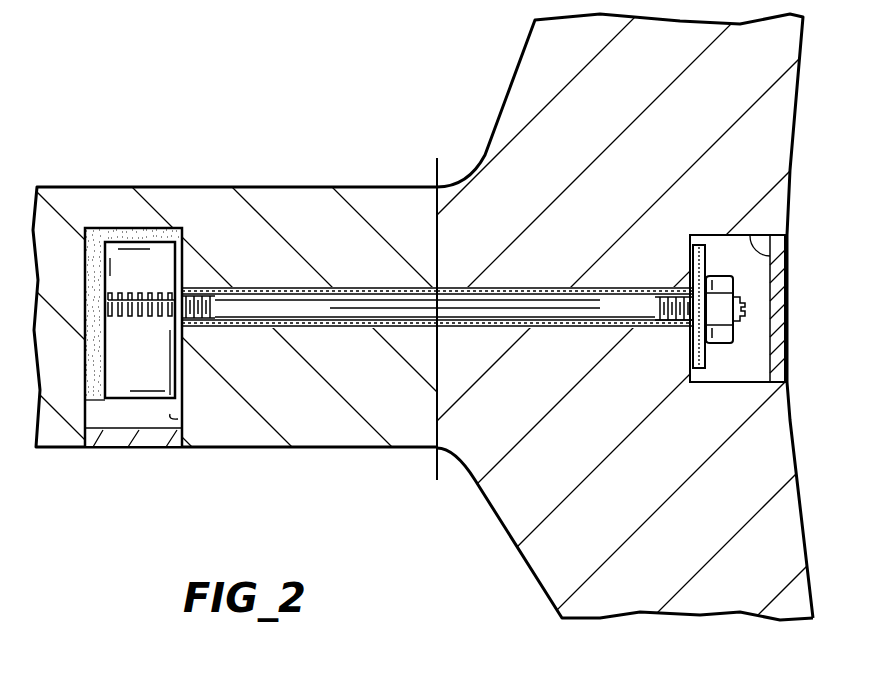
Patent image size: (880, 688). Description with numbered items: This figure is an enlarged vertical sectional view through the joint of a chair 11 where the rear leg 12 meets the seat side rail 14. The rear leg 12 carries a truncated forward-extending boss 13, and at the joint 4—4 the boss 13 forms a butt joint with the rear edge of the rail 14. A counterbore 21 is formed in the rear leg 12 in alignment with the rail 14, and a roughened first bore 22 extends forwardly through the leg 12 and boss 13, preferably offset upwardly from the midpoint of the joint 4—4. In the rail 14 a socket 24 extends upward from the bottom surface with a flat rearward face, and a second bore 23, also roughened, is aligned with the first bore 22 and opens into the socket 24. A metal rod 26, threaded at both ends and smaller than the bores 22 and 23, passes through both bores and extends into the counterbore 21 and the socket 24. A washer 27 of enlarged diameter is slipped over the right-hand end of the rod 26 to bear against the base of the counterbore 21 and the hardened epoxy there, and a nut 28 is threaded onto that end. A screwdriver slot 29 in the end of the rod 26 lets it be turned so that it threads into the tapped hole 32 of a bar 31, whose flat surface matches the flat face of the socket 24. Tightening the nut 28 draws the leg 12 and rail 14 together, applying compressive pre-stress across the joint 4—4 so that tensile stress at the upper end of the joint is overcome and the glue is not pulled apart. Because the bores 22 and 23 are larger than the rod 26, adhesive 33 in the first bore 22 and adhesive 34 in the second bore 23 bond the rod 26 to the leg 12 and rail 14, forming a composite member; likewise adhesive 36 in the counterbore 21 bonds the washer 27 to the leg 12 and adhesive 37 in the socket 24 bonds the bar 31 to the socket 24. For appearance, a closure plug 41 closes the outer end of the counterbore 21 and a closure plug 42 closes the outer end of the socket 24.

The chair 11 is at (368, 72).
The rear leg 12 is at (598, 543).
The boss 13 is at (487, 195).
The seat side rail 14 is at (275, 200).
The joint 4 is at (435, 321).
The counterbore 21 is at (790, 243).
The first bore 22 is at (544, 327).
The second bore 23 is at (337, 328).
The socket 24 is at (182, 418).
The metal rod 26 is at (515, 305).
The washer 27 is at (695, 340).
The nut 28 is at (727, 344).
The screwdriver slot 29 is at (746, 310).
The bar 31 is at (127, 370).
The tapped hole 32 is at (143, 300).
The adhesive 33 is at (622, 289).
The adhesive 34 is at (366, 289).
The adhesive 36 is at (696, 262).
The adhesive 37 is at (112, 228).
The closure plug 41 is at (780, 353).
The closure plug 42 is at (150, 440).